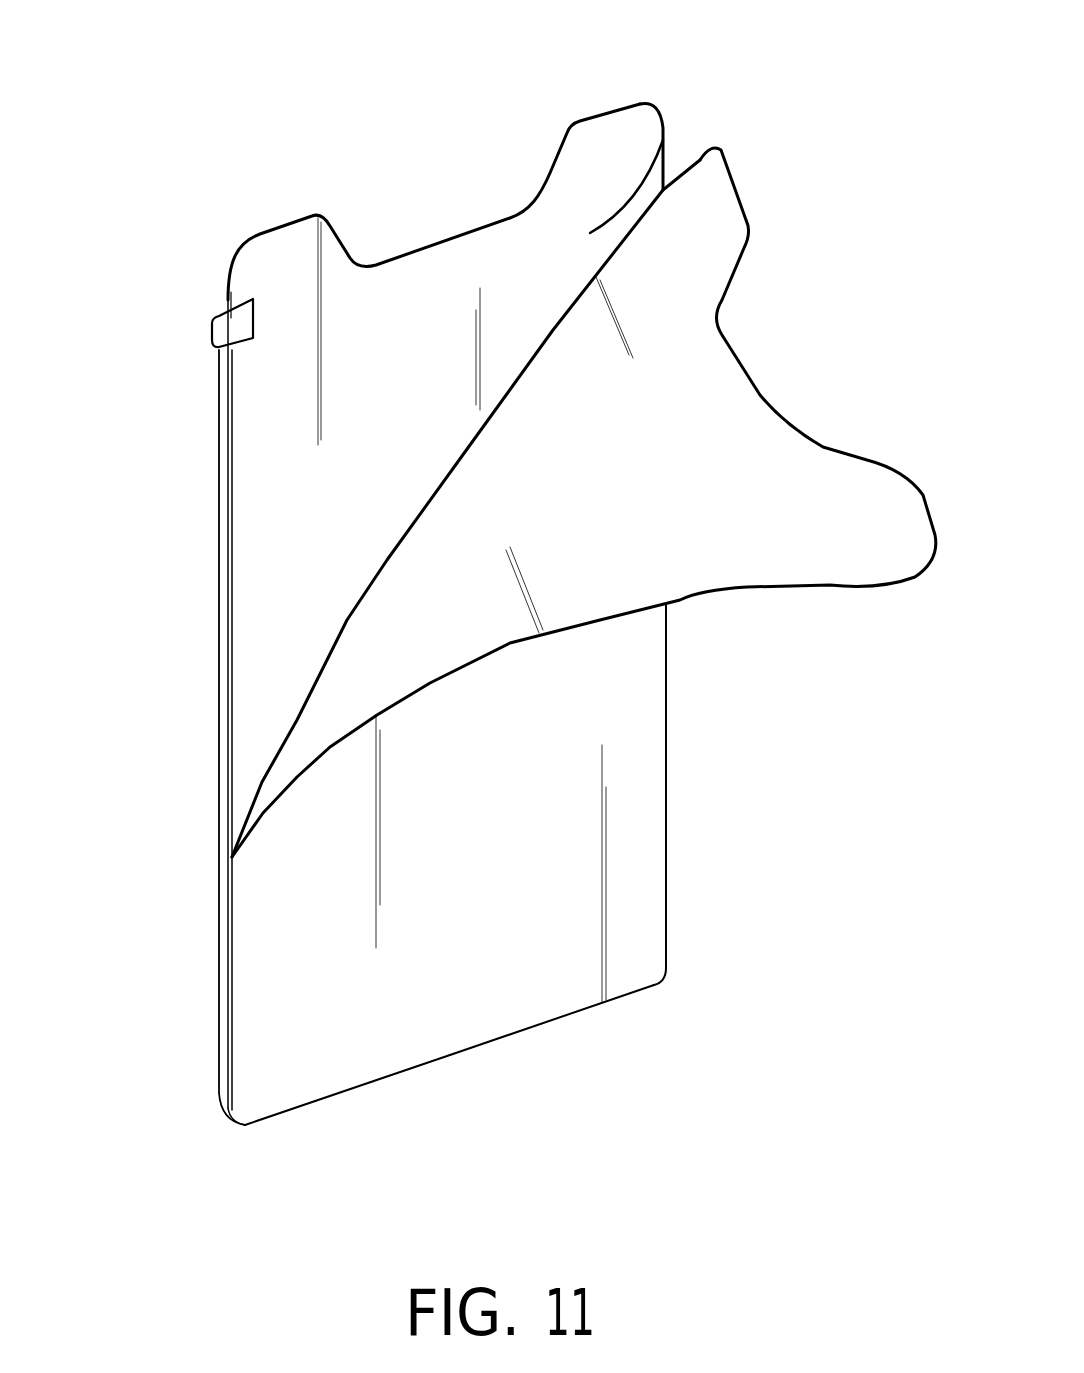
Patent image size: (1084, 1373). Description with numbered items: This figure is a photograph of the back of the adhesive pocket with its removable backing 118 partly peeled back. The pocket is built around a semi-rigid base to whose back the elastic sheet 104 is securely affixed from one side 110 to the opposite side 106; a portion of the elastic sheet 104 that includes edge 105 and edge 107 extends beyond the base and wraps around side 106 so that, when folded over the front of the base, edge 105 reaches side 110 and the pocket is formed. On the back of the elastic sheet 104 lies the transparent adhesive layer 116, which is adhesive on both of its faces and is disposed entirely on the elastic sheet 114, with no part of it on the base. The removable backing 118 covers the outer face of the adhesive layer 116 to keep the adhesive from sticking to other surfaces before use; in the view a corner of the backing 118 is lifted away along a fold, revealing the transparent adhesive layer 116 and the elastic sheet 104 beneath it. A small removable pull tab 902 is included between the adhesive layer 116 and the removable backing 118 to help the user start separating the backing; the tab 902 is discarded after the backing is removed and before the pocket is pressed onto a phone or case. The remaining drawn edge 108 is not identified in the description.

The elastic sheet 104 is at (218, 895).
The edge 105 is at (666, 863).
The side 106 is at (218, 560).
The edge 107 is at (518, 1033).
The bottom corner edge 108 is at (348, 1090).
The side 110 is at (666, 740).
The elastic sheet 114 is at (440, 243).
The adhesive layer 116 is at (663, 140).
The removable backing 118 is at (713, 408).
The pull tab 902 is at (223, 330).